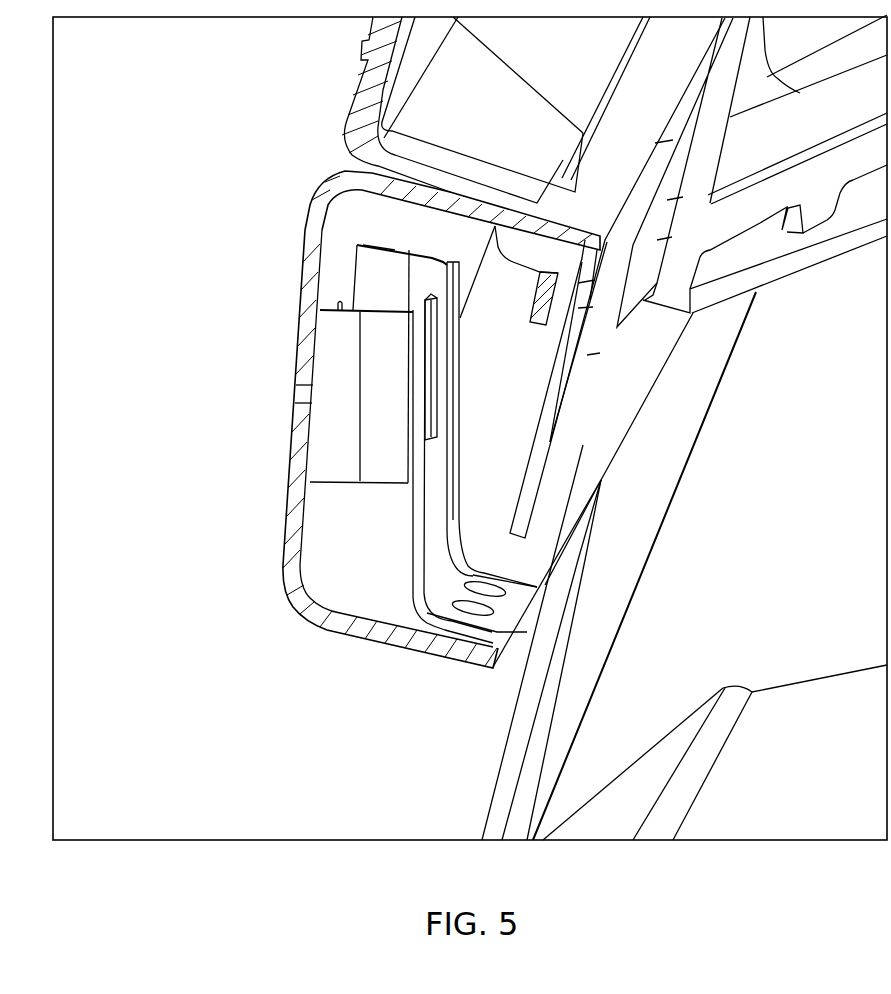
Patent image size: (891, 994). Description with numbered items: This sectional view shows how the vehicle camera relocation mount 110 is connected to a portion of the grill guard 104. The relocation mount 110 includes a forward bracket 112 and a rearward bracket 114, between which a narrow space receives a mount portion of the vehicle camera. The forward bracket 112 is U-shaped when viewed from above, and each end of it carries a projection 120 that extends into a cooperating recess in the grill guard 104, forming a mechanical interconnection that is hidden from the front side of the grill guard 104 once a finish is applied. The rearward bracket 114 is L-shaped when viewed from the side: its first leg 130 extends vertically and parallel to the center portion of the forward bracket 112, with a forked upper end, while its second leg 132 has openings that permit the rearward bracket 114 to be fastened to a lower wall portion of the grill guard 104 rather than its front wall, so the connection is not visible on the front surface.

The grill guard 104 is at (250, 670).
The vehicle camera relocation mount 110 is at (203, 302).
The forward bracket 112 is at (335, 440).
The rearward bracket 114 is at (412, 590).
The projection 120 is at (303, 394).
The first leg 130 is at (423, 348).
The second leg 132 is at (465, 627).